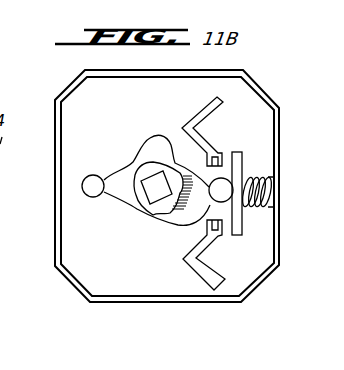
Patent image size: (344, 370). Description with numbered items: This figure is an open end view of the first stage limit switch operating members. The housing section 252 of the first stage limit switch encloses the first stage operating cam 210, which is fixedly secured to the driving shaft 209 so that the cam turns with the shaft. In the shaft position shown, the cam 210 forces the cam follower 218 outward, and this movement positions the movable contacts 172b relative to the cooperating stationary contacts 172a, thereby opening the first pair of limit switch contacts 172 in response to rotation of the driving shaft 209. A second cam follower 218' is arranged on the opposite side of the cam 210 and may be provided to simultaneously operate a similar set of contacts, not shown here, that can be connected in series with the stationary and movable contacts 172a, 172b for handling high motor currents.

The housing section 252 is at (279, 142).
The first stage operating cam 210 is at (154, 138).
The shaft 209 is at (152, 195).
The cam follower 218' is at (93, 169).
The cam follower 218 is at (193, 214).
The limit switch contacts 172 is at (250, 118).
The stationary contacts 172a is at (229, 141).
The movable contacts 172b is at (242, 224).